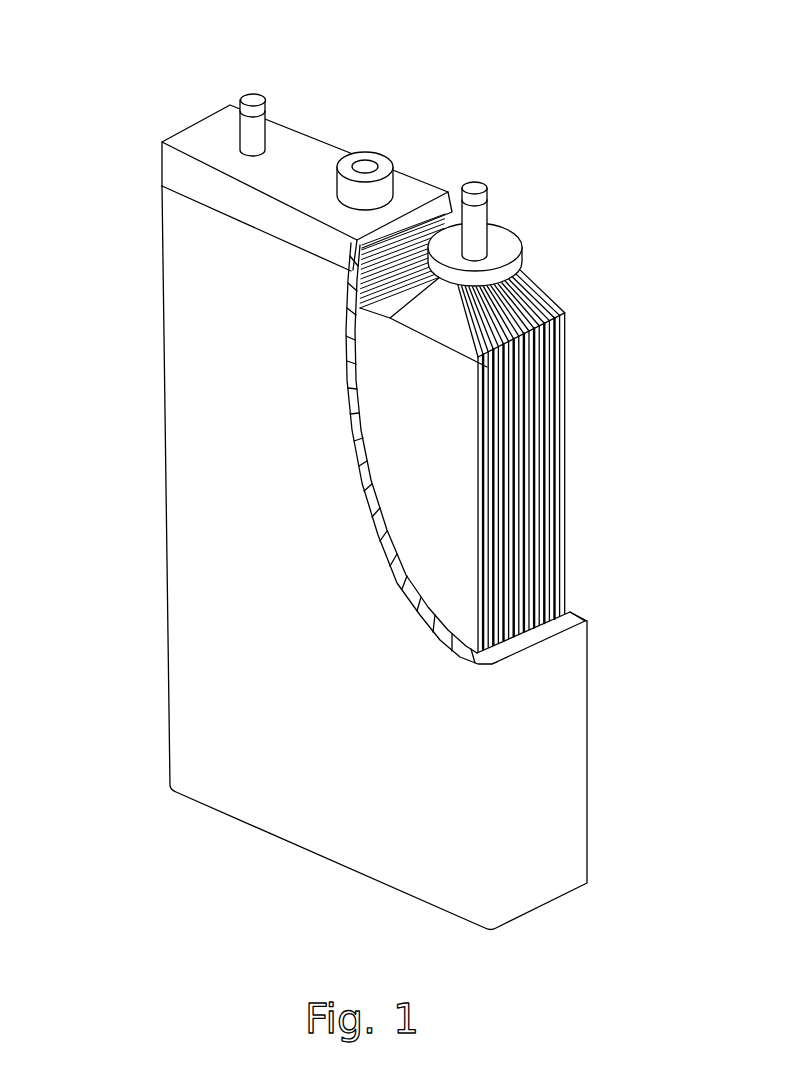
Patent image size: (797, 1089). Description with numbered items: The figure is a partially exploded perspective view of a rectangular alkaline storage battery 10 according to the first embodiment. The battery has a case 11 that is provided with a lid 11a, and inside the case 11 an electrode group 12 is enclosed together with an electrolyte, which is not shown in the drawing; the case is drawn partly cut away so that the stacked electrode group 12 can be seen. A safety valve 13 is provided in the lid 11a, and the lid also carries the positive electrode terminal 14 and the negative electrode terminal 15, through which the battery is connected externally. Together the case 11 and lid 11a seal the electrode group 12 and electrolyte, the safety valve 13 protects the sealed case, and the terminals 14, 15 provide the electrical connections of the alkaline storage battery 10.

The alkaline storage battery 10 is at (376, 472).
The case 11 is at (180, 612).
The lid 11a is at (320, 142).
The electrode group 12 is at (572, 513).
The safety valve 13 is at (373, 167).
The positive electrode terminal 14 is at (475, 188).
The negative electrode terminal 15 is at (254, 100).